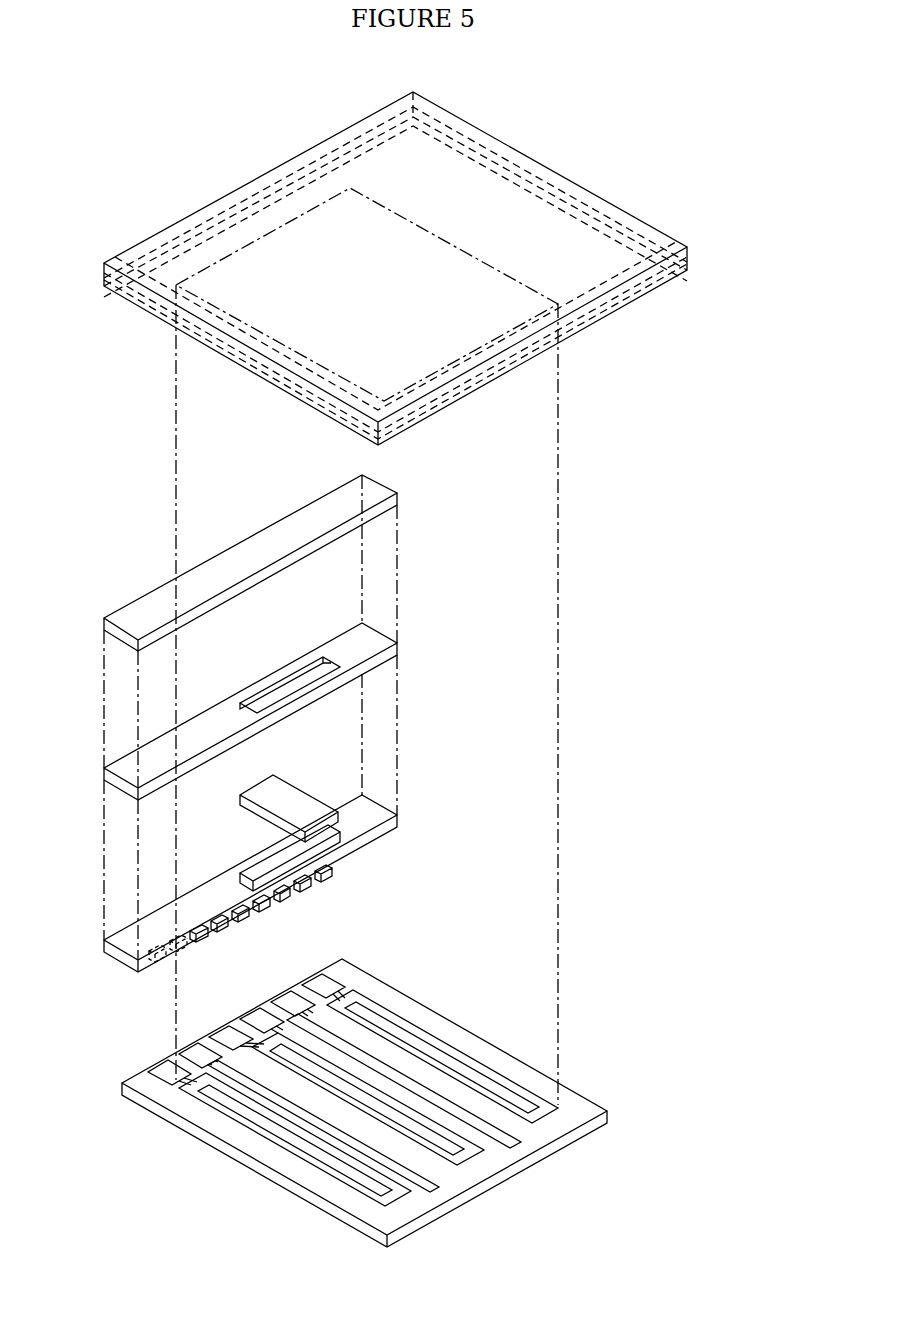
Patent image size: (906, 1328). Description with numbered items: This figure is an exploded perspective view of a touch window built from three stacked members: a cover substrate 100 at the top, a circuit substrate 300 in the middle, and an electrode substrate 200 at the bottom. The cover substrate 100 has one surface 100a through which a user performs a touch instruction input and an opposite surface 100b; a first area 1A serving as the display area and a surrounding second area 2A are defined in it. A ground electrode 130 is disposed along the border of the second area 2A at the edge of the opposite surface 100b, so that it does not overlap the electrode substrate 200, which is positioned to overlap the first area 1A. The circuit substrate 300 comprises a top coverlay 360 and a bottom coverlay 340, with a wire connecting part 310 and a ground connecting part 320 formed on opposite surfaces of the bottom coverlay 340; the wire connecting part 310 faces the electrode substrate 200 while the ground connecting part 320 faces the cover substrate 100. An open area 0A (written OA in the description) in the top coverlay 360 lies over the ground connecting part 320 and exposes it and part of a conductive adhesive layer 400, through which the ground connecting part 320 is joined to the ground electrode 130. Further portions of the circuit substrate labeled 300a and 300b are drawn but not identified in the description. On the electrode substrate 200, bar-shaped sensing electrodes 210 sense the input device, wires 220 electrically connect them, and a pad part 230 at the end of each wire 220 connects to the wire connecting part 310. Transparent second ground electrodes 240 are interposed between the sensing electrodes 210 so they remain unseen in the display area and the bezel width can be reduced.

The cover substrate 100 is at (590, 150).
The one surface 100a is at (612, 262).
The opposite surface 100b is at (647, 298).
The first area 1A is at (350, 307).
The second area 2A is at (492, 222).
The ground electrode 130 is at (245, 345).
The adhesive layer 400 is at (140, 597).
The circuit substrate 300 is at (326, 806).
The top coverlay 360 is at (400, 642).
The open area 0A is at (290, 680).
The ground connecting part 320 is at (335, 812).
The connection strip 300a is at (285, 840).
The bottom coverlay 340 is at (398, 815).
The wire connecting part 310 is at (180, 956).
The contact bumps 300b is at (255, 930).
The electrode substrate 200 is at (371, 1076).
The sensing electrode 210 is at (460, 1057).
The wire 220 is at (340, 987).
The pad part 230 is at (310, 955).
The second ground electrode 240 is at (387, 1052).